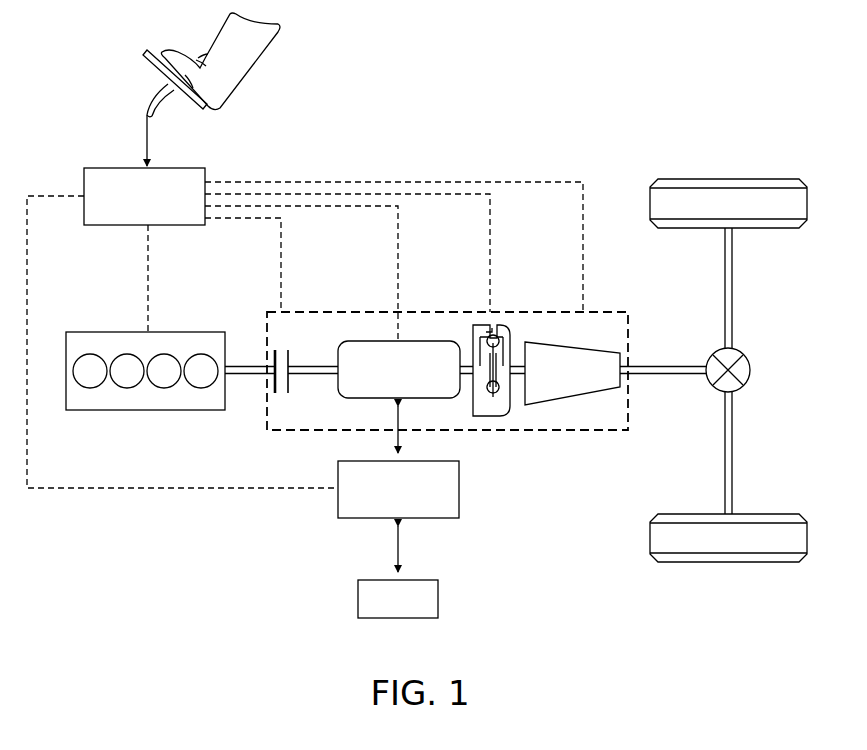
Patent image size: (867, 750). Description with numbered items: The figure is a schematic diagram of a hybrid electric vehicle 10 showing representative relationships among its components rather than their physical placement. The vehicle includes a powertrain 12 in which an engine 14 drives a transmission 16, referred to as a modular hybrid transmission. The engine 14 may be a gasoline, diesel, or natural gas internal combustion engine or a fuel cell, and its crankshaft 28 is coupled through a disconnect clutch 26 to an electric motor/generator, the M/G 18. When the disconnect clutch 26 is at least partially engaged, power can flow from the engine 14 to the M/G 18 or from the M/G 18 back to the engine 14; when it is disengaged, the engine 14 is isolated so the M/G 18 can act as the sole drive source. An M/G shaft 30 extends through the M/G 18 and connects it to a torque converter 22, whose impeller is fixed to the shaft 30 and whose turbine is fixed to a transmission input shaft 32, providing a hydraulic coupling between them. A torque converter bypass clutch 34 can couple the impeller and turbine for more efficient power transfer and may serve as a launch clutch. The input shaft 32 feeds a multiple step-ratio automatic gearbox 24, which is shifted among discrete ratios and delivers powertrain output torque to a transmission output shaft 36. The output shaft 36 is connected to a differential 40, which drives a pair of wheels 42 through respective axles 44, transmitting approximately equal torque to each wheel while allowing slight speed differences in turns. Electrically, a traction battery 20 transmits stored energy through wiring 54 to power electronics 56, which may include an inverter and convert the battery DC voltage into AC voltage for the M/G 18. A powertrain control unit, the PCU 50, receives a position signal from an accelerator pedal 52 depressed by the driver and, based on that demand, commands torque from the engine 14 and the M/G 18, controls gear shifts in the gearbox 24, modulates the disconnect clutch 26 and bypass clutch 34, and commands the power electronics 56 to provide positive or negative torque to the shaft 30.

The hybrid electric vehicle 10 is at (633, 120).
The powertrain 12 is at (242, 521).
The engine 14 is at (115, 332).
The transmission 16 is at (428, 312).
The electric motor/generator (M/G) 18 is at (378, 341).
The traction battery 20 is at (438, 600).
The torque converter 22 is at (487, 416).
The gearbox 24 is at (565, 400).
The disconnect clutch 26 is at (278, 395).
The crankshaft 28 is at (249, 366).
The M/G shaft 30 is at (323, 366).
The transmission input shaft 32 is at (517, 366).
The torque converter bypass clutch 34 is at (493, 330).
The transmission output shaft 36 is at (665, 366).
The differential 40 is at (752, 368).
The wheels 42 is at (730, 179).
The axles 44 is at (733, 300).
The powertrain control unit (PCU) 50 is at (115, 168).
The accelerator pedal 52 is at (152, 68).
The wiring 54 is at (401, 551).
The power electronics 56 is at (459, 492).